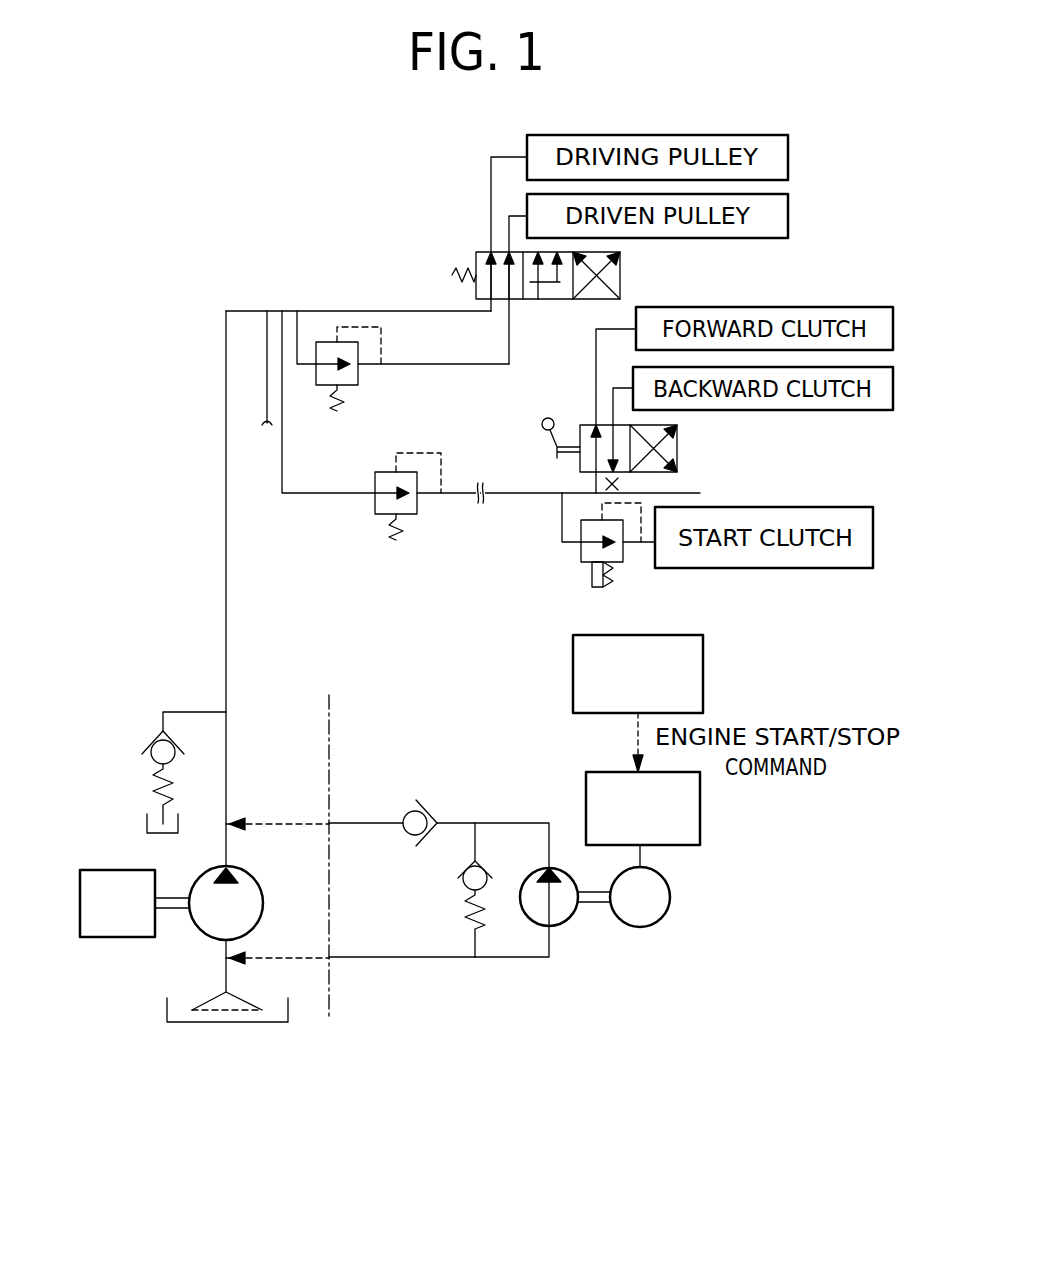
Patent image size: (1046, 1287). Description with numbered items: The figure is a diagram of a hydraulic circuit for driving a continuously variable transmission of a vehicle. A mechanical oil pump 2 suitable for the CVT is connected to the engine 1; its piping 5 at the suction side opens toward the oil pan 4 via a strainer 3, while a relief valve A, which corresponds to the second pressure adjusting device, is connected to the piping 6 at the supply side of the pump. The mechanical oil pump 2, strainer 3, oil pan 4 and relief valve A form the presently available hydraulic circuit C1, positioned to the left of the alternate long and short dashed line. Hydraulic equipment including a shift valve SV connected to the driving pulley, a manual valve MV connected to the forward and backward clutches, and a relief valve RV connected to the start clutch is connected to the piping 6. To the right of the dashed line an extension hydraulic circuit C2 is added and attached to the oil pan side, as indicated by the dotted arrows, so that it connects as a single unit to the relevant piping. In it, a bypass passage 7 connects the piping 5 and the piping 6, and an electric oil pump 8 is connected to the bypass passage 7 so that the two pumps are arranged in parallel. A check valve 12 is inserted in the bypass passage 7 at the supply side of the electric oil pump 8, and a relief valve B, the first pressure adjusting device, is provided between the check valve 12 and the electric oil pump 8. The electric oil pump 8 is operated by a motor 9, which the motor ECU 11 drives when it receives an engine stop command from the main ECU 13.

The engine 1 is at (95, 870).
The mechanical oil pump 2 is at (262, 887).
The strainer 3 is at (213, 1000).
The oil pan 4 is at (165, 1012).
The piping at the suction side 5 is at (230, 977).
The piping at the supply side 6 is at (227, 768).
The bypass passage 7 is at (393, 960).
The electric oil pump 8 is at (563, 920).
The motor 9 is at (668, 900).
The motor ECU 11 is at (700, 807).
The check valve 12 is at (422, 805).
The main ECU 13 is at (703, 668).
The relief valve A is at (148, 748).
The relief valve B is at (458, 877).
The presently available hydraulic circuit C1 is at (210, 1055).
The extension hydraulic circuit C2 is at (489, 1010).
The shift valve SV is at (622, 272).
The manual valve MV is at (677, 452).
The relief valve RV is at (623, 562).